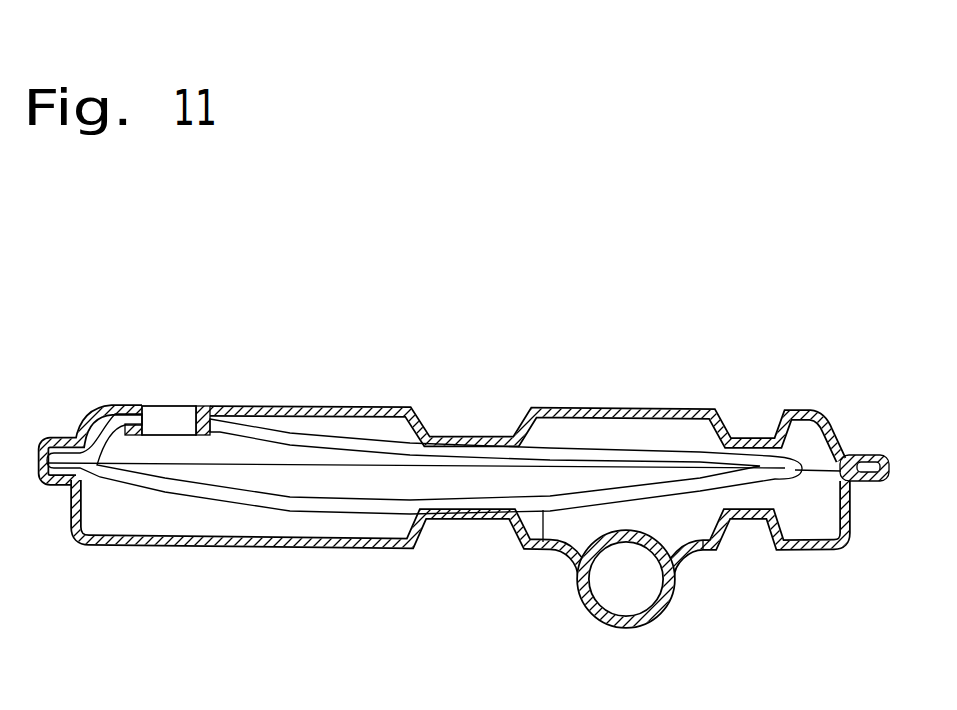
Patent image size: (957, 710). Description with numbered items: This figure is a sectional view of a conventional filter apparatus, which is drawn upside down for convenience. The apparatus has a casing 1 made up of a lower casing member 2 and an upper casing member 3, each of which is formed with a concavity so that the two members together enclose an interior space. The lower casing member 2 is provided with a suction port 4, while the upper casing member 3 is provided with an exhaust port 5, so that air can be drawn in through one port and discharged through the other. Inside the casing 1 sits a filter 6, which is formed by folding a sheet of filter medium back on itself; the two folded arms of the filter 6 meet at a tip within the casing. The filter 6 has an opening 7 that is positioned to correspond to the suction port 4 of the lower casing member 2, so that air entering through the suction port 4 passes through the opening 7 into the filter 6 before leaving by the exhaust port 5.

The casing 1 is at (843, 411).
The lower casing member 2 is at (620, 408).
The upper casing member 3 is at (347, 549).
The suction port 4 is at (187, 407).
The exhaust port 5 is at (656, 597).
The filter 6 is at (546, 546).
The opening 7 is at (132, 438).